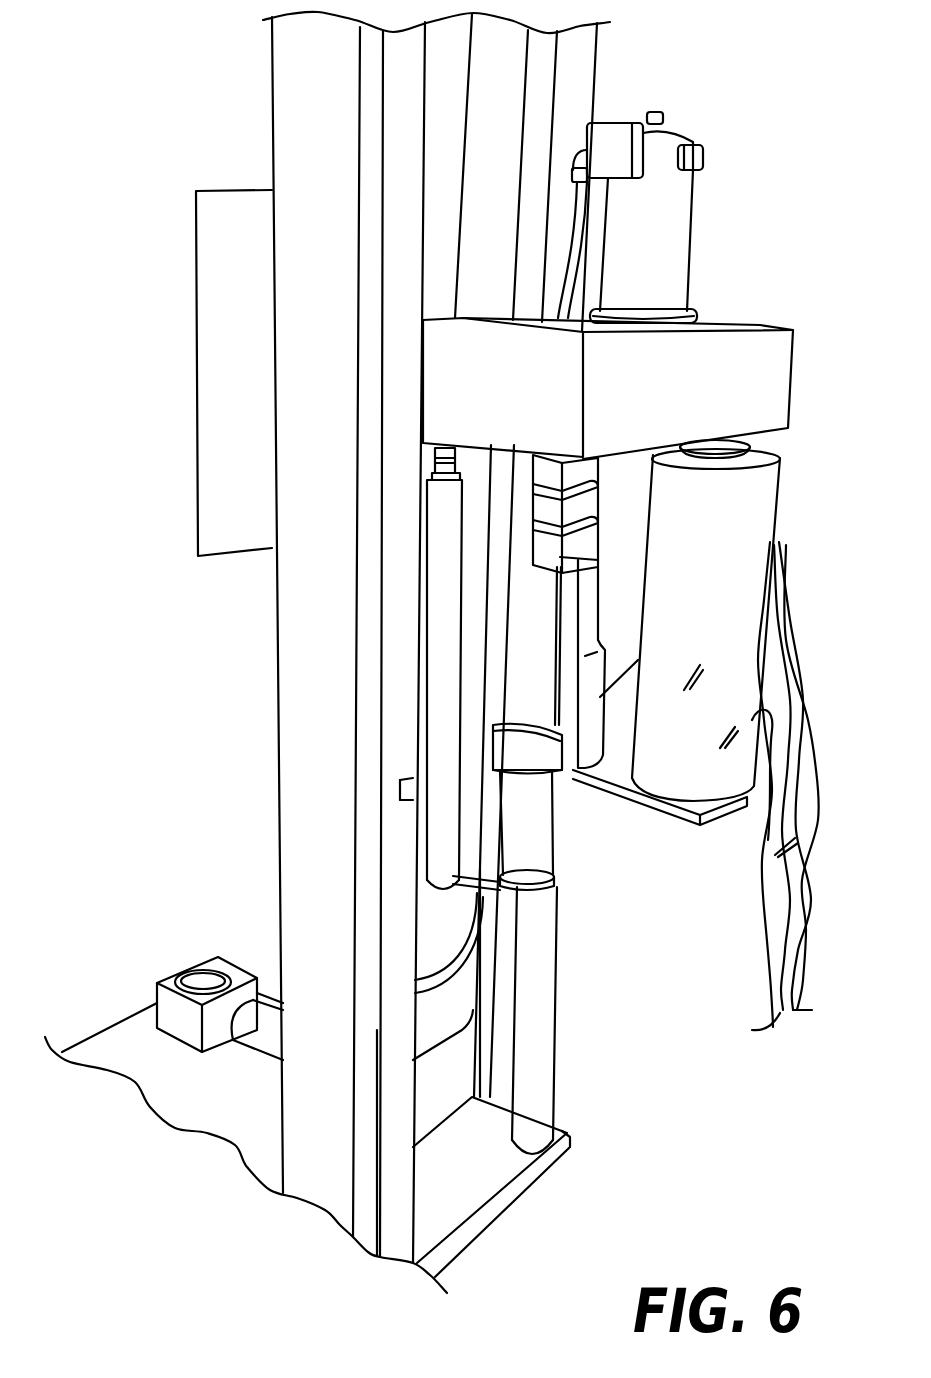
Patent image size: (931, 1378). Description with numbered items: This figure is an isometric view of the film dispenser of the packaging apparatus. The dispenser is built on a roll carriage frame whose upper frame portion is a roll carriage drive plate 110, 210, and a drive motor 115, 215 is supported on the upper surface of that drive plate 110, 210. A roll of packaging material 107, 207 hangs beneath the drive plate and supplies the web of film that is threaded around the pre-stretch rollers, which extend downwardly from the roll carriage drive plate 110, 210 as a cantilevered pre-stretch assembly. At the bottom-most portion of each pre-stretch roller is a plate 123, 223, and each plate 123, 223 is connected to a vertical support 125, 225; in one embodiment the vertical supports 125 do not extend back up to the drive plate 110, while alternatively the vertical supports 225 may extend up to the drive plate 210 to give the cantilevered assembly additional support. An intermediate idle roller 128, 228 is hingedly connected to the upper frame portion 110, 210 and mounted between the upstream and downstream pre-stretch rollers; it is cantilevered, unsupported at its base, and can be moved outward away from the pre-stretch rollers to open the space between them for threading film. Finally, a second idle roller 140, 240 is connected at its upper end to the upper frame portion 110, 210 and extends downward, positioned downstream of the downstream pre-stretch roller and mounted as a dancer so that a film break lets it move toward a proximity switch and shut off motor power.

The roll of bag material 107 is at (689, 735).
The roll of bag material 207 is at (740, 606).
The roll carriage drive plate 110 is at (608, 388).
The roll carriage drive plate 210 is at (747, 397).
The drive motor 115 is at (697, 217).
The drive motor 215 is at (660, 240).
The plate 123 is at (403, 771).
The guide rod assembly 223 is at (430, 890).
The vertical support 125 is at (602, 860).
The vertical support 225 is at (563, 830).
The intermediate idle roller 128 is at (584, 907).
The coupling ring 228 is at (535, 899).
The second idle roller 140 is at (377, 668).
The actuator cylinder 240 is at (438, 818).